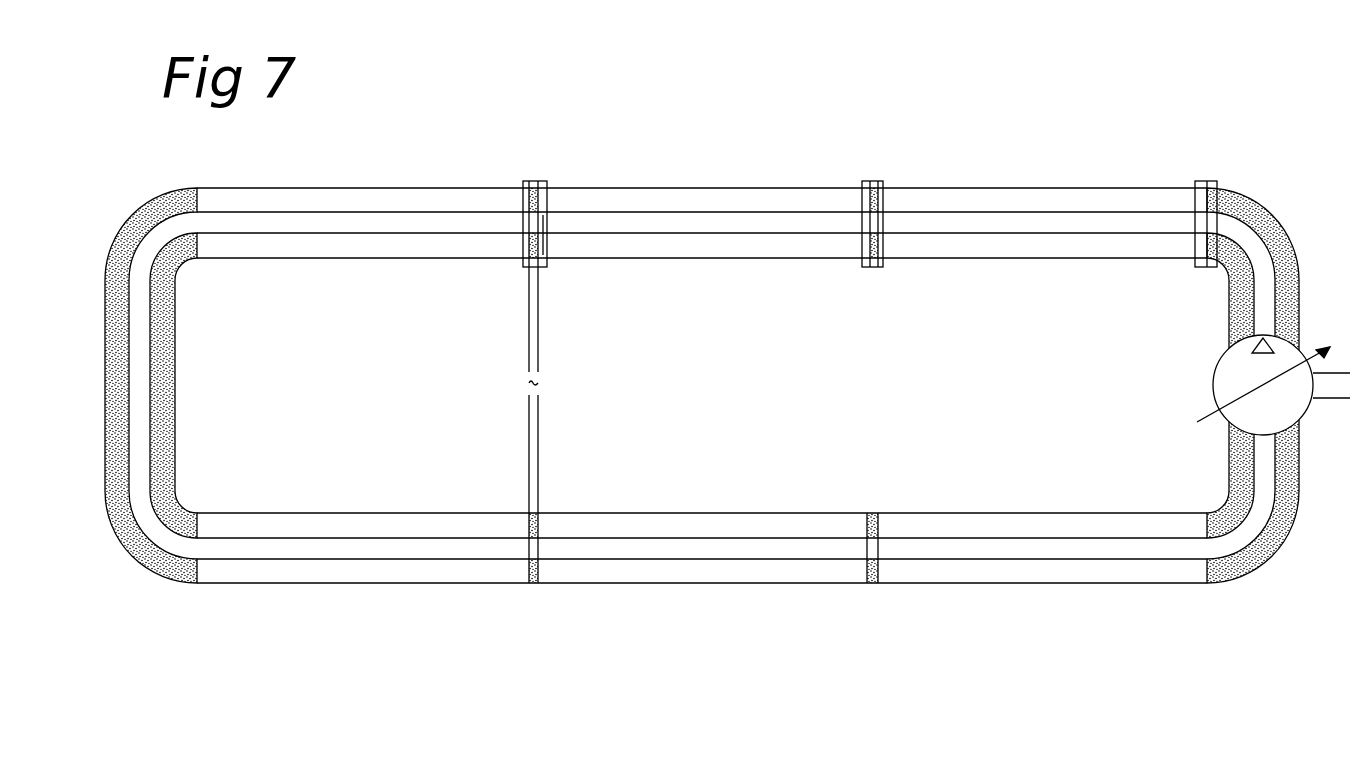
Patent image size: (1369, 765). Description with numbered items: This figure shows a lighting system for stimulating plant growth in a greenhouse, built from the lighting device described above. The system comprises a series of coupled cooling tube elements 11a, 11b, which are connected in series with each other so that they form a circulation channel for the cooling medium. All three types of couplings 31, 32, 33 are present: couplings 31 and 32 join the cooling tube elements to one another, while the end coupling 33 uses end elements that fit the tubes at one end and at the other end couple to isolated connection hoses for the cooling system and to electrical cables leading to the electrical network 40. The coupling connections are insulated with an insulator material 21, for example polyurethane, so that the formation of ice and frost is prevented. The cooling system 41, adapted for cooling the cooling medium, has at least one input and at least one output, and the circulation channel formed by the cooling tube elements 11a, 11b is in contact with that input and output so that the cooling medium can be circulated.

The insulator material 21 is at (133, 228).
The cooling tube element 11a is at (384, 574).
The cooling tube element 11b is at (689, 574).
The coupling 31 is at (540, 181).
The coupling 32 is at (862, 185).
The end coupling 33 is at (1215, 181).
The electrical network 40 is at (527, 377).
The cooling system 41 is at (1228, 383).